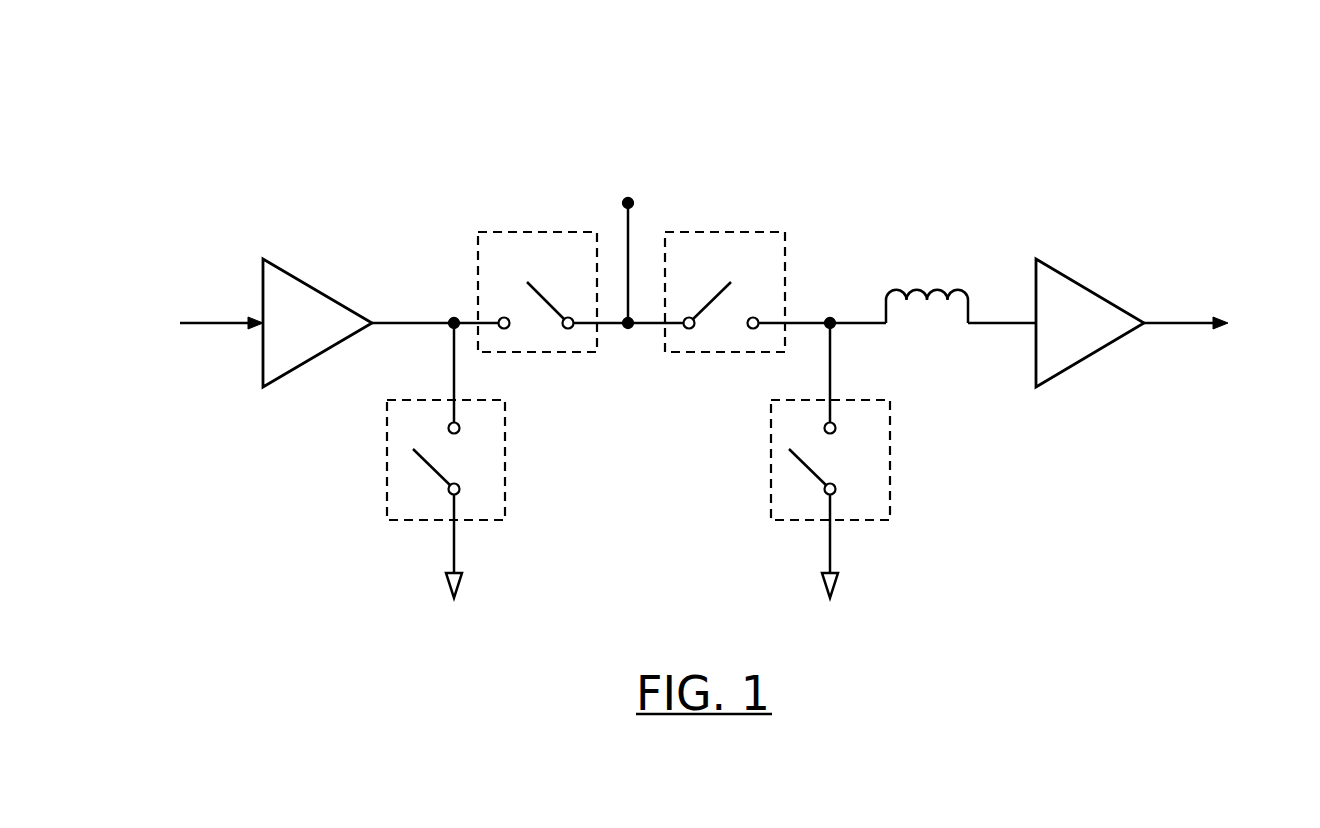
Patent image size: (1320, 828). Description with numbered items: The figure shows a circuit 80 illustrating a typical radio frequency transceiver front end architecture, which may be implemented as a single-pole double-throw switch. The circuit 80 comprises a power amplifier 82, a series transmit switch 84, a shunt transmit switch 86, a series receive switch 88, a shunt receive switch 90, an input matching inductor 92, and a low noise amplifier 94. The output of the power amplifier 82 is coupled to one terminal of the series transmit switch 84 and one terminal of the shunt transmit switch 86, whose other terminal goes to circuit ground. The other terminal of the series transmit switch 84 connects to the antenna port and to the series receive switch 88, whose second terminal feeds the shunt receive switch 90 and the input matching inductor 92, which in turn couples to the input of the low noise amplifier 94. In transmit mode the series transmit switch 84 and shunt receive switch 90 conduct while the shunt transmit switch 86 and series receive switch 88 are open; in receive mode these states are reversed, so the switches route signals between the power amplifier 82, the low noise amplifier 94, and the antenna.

The circuit 80 is at (503, 62).
The power amplifier 82 is at (293, 274).
The series transmit switch 84 is at (504, 232).
The shunt transmit switch 86 is at (417, 400).
The series receive switch 88 is at (757, 232).
The shunt receive switch 90 is at (866, 400).
The input matching inductor 92 is at (927, 285).
The low noise amplifier 94 is at (1065, 273).